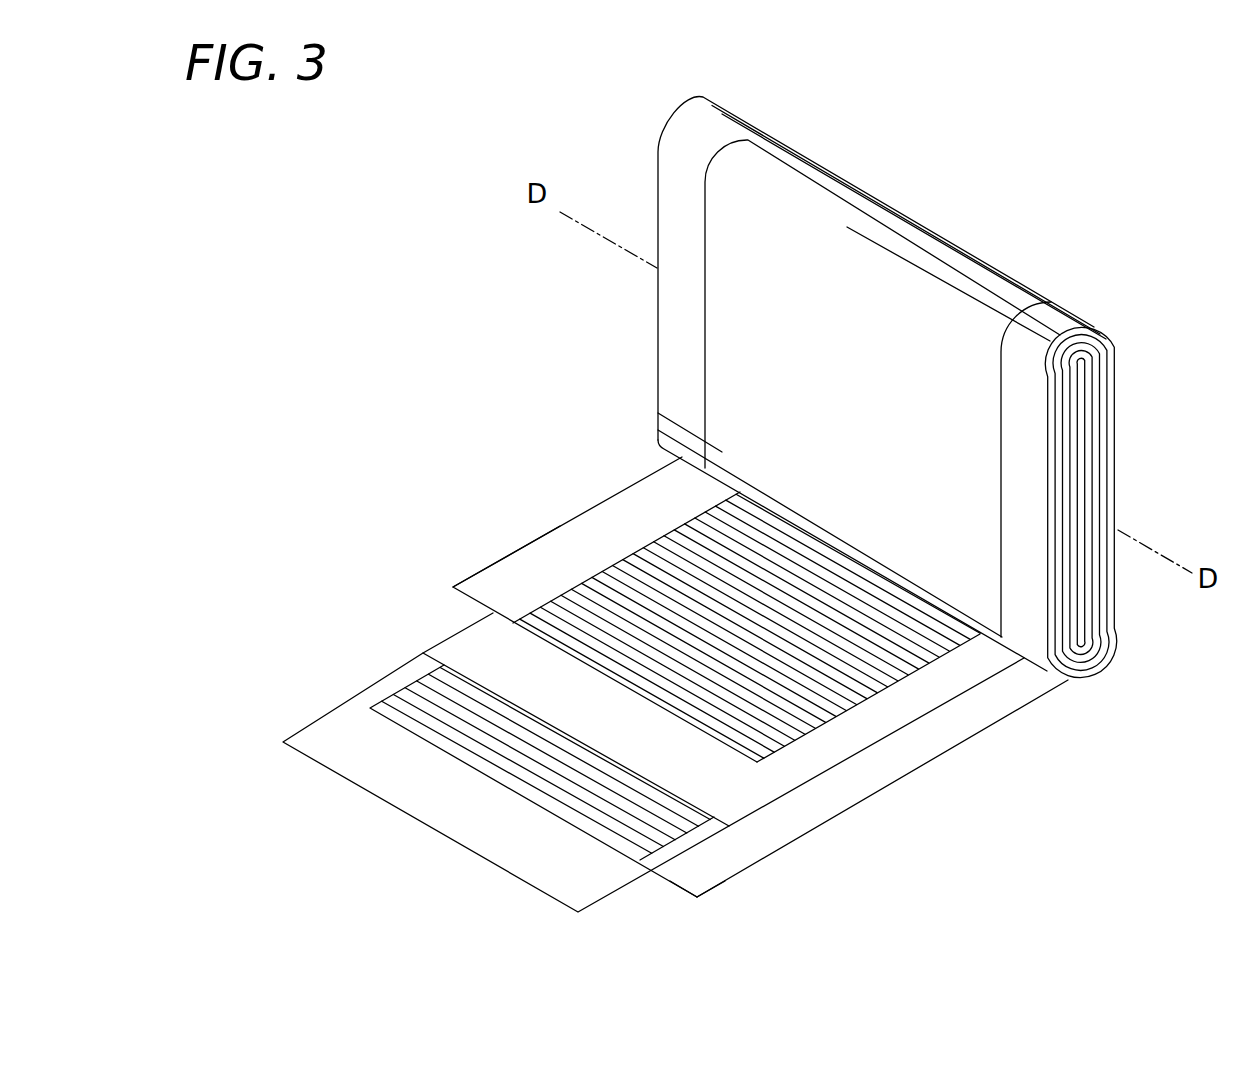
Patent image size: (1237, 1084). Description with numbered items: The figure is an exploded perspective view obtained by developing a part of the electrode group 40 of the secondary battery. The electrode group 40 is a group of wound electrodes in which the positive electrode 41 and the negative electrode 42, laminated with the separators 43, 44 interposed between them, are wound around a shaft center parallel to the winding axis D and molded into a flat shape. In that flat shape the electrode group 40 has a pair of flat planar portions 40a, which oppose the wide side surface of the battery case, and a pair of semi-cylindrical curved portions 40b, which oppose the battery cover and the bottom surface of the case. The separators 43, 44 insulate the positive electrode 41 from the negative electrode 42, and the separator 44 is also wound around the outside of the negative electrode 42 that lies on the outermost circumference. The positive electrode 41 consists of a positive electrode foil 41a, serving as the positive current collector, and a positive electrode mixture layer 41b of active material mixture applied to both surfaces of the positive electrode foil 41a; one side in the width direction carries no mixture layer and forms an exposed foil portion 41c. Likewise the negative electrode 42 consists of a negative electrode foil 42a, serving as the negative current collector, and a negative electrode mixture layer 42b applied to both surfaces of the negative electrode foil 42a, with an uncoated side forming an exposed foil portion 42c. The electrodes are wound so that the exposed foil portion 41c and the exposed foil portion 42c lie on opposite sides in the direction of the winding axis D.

The electrode group 40 is at (866, 430).
The flat planar portion 40a is at (748, 343).
The curved portion 40b is at (845, 194).
The positive electrode 41 is at (735, 620).
The positive electrode foil 41a is at (513, 548).
The positive electrode mixture layer 41b is at (870, 670).
The exposed foil portion 41c is at (641, 510).
The negative electrode 42 is at (697, 788).
The negative electrode foil 42a is at (718, 893).
The negative electrode mixture layer 42b is at (650, 822).
The exposed foil portion 42c is at (833, 790).
The separator 43 is at (470, 648).
The separator 44 is at (332, 733).